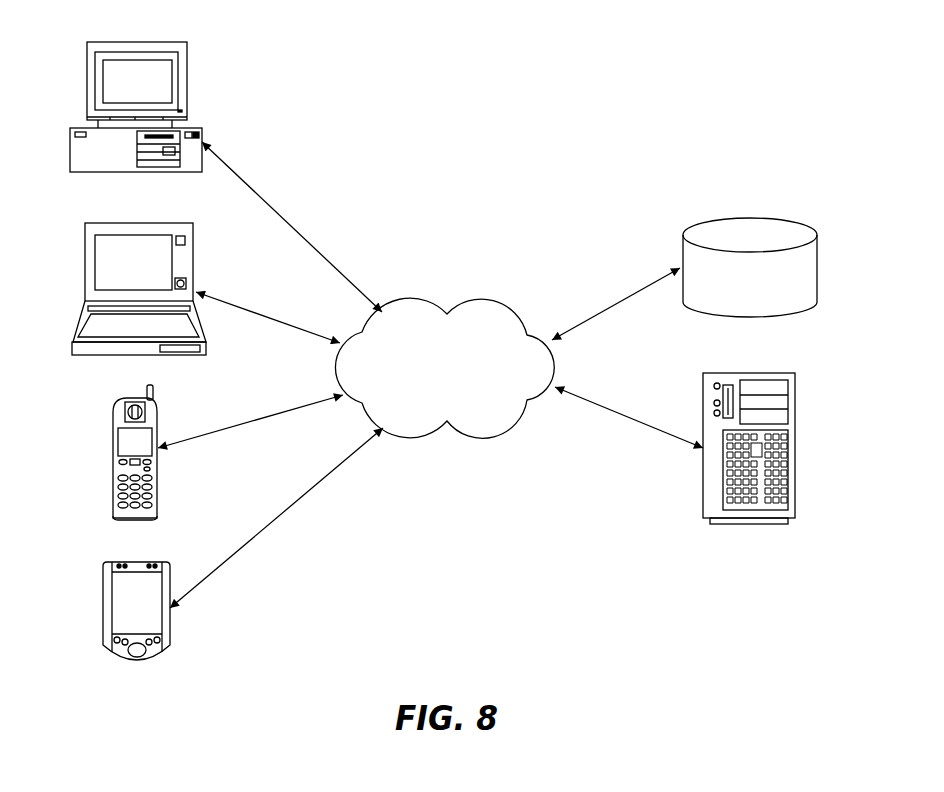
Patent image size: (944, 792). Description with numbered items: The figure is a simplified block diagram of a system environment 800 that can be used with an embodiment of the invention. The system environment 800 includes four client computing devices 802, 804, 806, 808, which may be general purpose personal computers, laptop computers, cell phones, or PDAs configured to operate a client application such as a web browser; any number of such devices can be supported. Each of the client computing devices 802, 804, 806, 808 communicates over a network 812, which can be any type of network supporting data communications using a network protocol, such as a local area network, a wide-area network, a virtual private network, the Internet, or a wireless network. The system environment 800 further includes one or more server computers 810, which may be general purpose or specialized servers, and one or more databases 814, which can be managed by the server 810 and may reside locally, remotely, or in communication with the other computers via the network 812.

The system environment 800 is at (748, 74).
The client computing device 802 is at (108, 40).
The client computing device 804 is at (108, 223).
The client computing device 806 is at (113, 413).
The client computing device 808 is at (115, 563).
The server computer 810 is at (785, 373).
The network 812 is at (444, 368).
The databases 814 is at (783, 218).